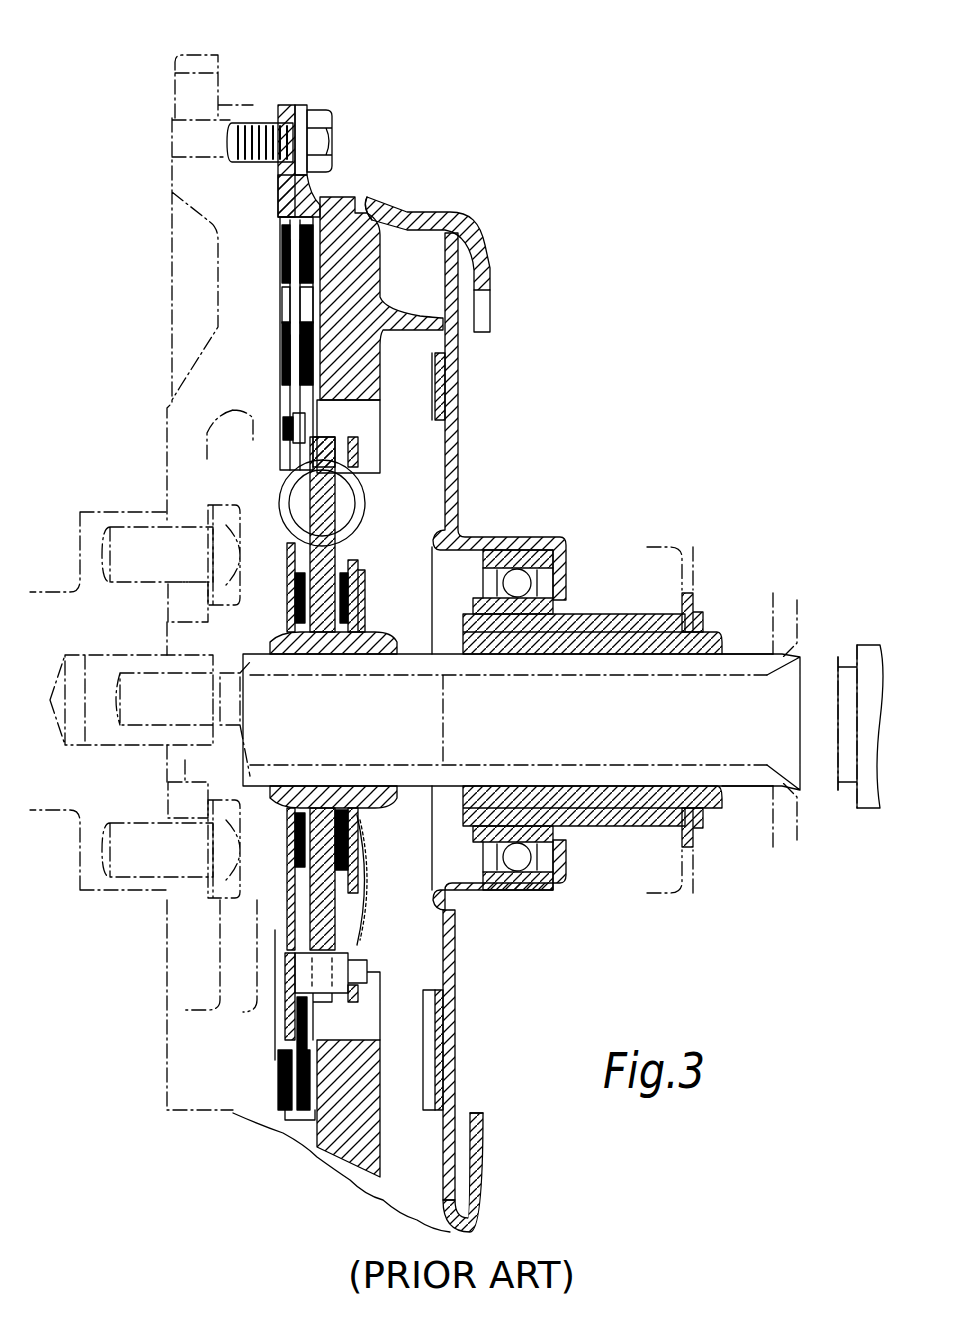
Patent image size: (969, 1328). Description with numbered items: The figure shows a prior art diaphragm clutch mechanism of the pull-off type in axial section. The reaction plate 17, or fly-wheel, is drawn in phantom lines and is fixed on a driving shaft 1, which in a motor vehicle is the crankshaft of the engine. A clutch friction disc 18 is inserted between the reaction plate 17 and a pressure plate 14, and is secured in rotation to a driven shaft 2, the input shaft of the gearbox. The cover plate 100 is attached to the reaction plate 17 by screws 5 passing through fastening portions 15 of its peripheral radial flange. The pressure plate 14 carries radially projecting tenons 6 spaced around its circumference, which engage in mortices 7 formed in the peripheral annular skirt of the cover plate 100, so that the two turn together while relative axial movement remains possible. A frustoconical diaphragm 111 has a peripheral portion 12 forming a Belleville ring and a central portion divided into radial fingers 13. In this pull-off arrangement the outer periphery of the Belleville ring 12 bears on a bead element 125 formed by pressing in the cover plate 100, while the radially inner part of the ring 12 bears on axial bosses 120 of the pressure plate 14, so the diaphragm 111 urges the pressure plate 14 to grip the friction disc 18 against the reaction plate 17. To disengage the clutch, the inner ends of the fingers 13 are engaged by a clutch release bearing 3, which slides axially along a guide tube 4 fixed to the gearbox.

The driving shaft 1 is at (50, 588).
The driven shaft 2 is at (585, 697).
The clutch release bearing 3 is at (520, 903).
The guide tube 4 is at (757, 836).
The screws 5 is at (310, 105).
The tenons 6 is at (368, 215).
The mortices 7 is at (325, 197).
The peripheral portion 12 is at (455, 1128).
The radial fingers 13 is at (462, 464).
The pressure plate 14 is at (355, 352).
The fastening portions 15 is at (300, 105).
The reaction plate 17 is at (200, 178).
The clutch friction disc 18 is at (282, 262).
The cover plate 100 is at (494, 282).
The diaphragm 111 is at (470, 404).
The axial bosses 120 is at (450, 1085).
The bead element 125 is at (465, 1217).